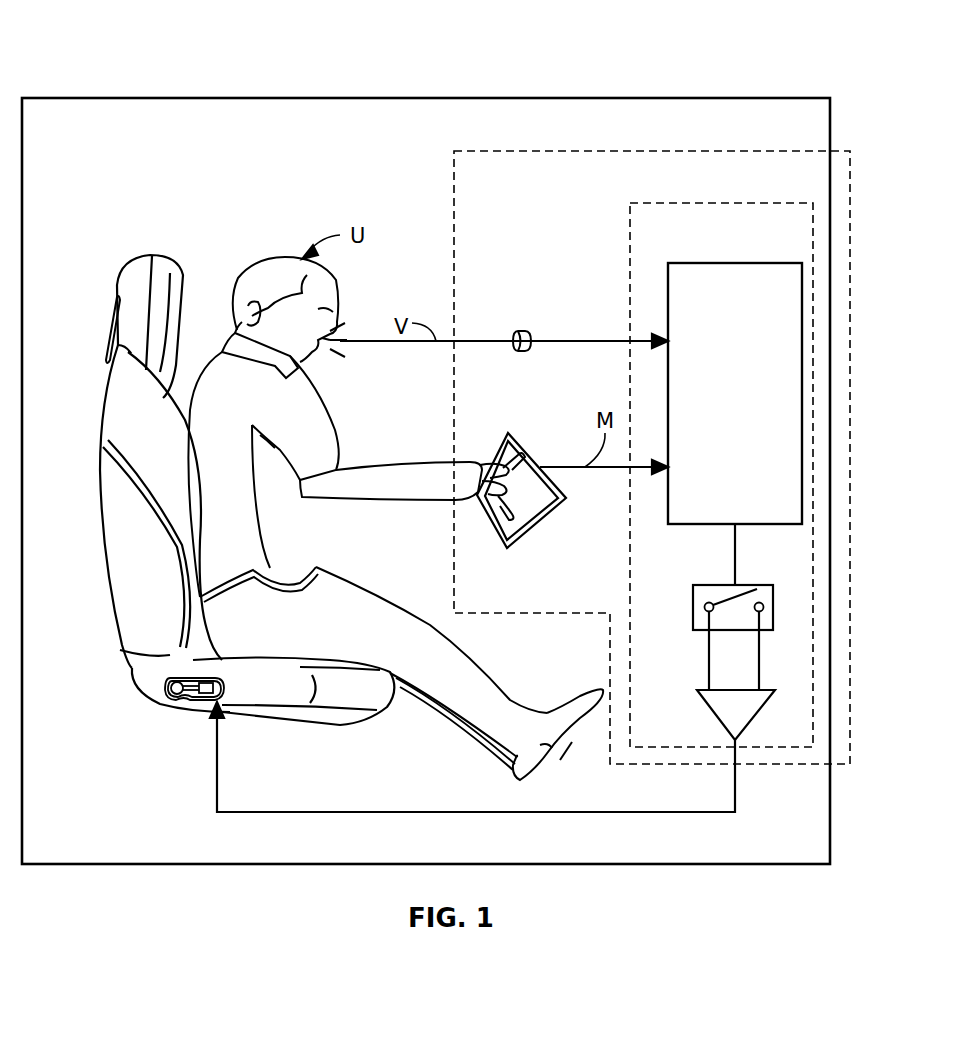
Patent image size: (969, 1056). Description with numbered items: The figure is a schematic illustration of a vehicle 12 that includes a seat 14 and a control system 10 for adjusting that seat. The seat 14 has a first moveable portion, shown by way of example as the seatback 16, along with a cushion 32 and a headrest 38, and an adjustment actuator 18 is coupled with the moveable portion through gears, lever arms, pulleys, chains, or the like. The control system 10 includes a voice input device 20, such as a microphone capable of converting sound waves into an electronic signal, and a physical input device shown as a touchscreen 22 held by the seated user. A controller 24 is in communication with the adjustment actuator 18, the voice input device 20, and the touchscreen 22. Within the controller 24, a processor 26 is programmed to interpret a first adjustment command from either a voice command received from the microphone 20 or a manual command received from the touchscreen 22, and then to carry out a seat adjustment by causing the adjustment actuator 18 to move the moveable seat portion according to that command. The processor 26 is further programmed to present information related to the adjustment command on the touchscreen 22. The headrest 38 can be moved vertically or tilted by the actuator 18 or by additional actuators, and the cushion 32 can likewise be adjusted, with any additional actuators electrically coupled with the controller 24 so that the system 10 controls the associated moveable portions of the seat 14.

The control system 10 is at (850, 225).
The vehicle 12 is at (733, 66).
The seat 14 is at (124, 682).
The seatback 16 is at (117, 542).
The adjustment actuator 18 is at (208, 701).
The voice input device 20 is at (522, 331).
The touchscreen 22 is at (511, 456).
The controller 24 is at (813, 364).
The processor 26 is at (718, 262).
The cushion 32 is at (300, 686).
The headrest 38 is at (116, 322).